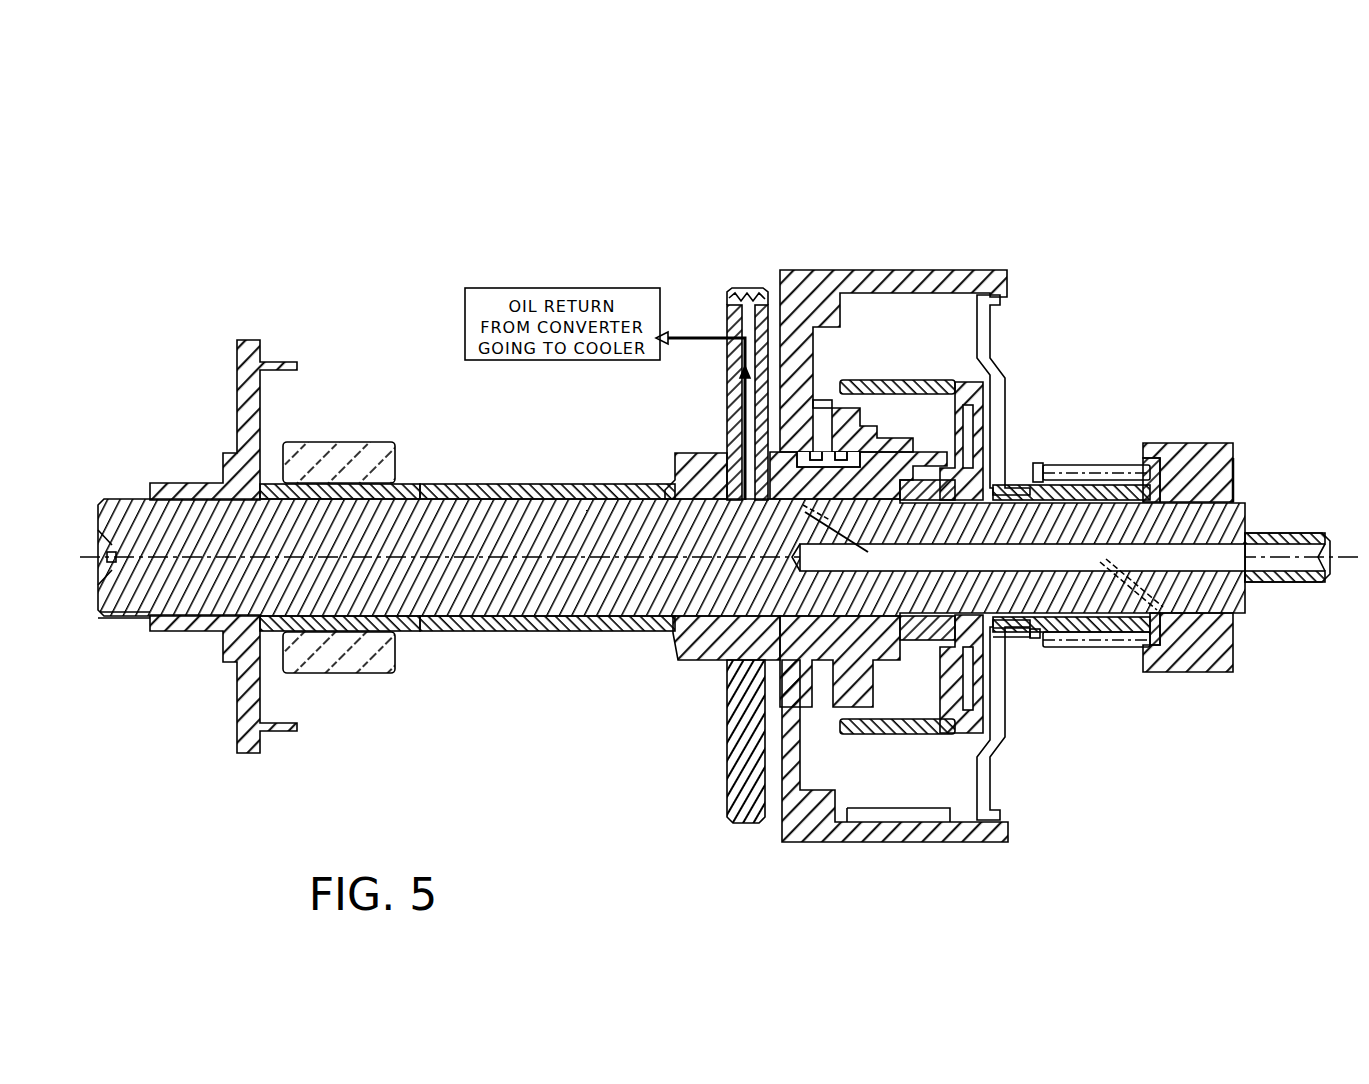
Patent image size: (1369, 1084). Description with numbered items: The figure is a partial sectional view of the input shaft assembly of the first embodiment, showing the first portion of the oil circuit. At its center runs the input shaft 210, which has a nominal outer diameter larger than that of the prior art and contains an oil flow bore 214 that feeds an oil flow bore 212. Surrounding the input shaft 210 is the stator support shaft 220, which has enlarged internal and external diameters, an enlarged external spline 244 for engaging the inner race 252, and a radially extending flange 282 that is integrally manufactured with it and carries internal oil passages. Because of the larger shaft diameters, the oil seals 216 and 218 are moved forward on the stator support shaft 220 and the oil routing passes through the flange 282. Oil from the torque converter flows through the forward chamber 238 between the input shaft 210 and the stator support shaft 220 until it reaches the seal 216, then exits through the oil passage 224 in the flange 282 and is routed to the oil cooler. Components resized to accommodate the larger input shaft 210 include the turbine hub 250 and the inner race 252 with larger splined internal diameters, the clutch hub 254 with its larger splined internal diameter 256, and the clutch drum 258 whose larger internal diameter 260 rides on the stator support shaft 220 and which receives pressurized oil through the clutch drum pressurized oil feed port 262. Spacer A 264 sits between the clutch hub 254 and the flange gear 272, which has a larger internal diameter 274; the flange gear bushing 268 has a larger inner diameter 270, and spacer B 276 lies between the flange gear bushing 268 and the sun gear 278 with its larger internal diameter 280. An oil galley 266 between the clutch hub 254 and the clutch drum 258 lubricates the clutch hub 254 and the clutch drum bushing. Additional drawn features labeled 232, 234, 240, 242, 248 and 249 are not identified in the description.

The input shaft 210 is at (128, 507).
The oil flow bore 212 is at (1270, 550).
The oil flow bore 214 is at (722, 620).
The oil seal 216 is at (775, 616).
The oil seal 218 is at (787, 662).
The stator support shaft 220 is at (508, 632).
The oil passage 224 is at (742, 437).
The plate 232 is at (772, 455).
The ring 234 is at (872, 462).
The forward chamber 238 is at (585, 632).
The oil passage 240 is at (850, 495).
The seal 242 is at (116, 619).
The external spline 244 is at (400, 626).
The block 248 is at (843, 618).
The passage 249 is at (1073, 560).
The turbine hub 250 is at (237, 363).
The inner race 252 is at (335, 447).
The clutch hub 254 is at (907, 735).
The splined internal diameter 256 is at (950, 618).
The clutch drum 258 is at (897, 282).
The internal diameter 260 is at (832, 448).
The clutch drum pressurized oil feed port 262 is at (822, 400).
The spacer A 264 is at (1000, 408).
The oil galley 266 is at (1007, 462).
The flange gear bushing 268 is at (1167, 443).
The inner diameter 270 is at (1233, 447).
The flange gear 272 is at (1032, 641).
The internal diameter 274 is at (1115, 648).
The spacer B 276 is at (1160, 630).
The sun gear 278 is at (1233, 478).
The internal diameter 280 is at (1233, 620).
The radially extending flange 282 is at (727, 407).